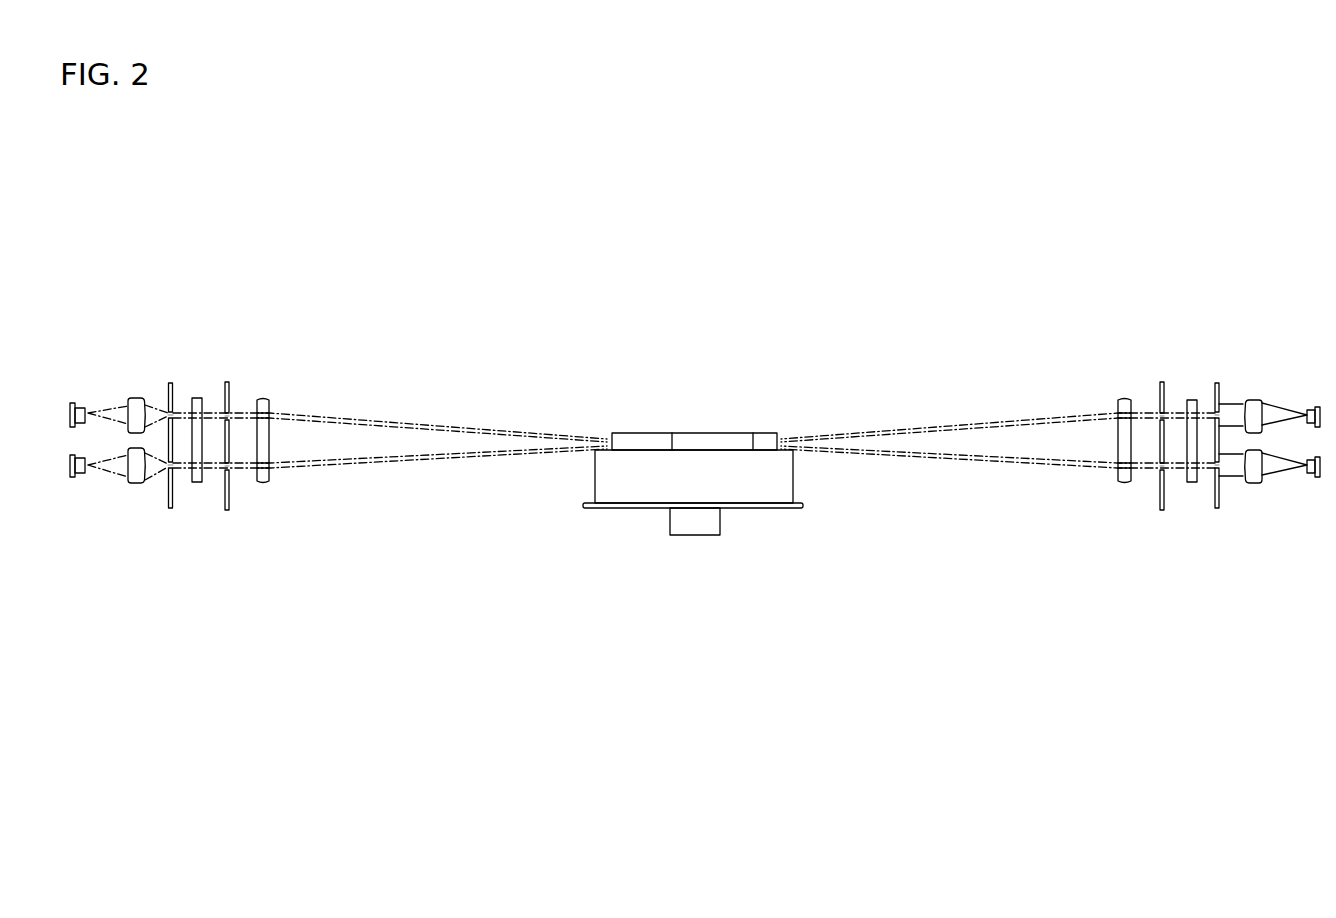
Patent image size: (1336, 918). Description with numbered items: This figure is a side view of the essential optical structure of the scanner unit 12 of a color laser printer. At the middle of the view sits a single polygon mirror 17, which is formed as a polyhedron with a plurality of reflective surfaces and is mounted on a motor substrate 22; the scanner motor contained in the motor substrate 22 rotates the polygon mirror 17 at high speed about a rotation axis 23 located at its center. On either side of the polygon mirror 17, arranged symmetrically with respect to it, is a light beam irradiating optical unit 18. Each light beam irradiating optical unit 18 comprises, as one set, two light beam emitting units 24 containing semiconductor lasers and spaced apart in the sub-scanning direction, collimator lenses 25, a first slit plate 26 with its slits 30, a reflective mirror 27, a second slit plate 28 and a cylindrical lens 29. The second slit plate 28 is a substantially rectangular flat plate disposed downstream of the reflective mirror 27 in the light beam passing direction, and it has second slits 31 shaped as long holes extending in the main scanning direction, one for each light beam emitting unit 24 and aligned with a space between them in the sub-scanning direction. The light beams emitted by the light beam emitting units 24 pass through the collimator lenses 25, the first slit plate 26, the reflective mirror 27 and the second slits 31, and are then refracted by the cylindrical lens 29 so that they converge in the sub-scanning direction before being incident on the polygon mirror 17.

The scanner unit 12 is at (707, 613).
The polygon mirror 17 is at (692, 433).
The light beam irradiating optical unit 18 is at (209, 351).
The motor substrate 22 is at (789, 478).
The rotation axis 23 is at (711, 523).
The light beam emitting unit 24 is at (82, 403).
The collimator lens 25 is at (140, 398).
The first slit plate 26 is at (170, 383).
The reflective mirror 27 is at (197, 482).
The second slit plate 28 is at (227, 382).
The cylindrical lens 29 is at (263, 398).
The first aperture 30 is at (168, 414).
The second slit 31 is at (229, 416).